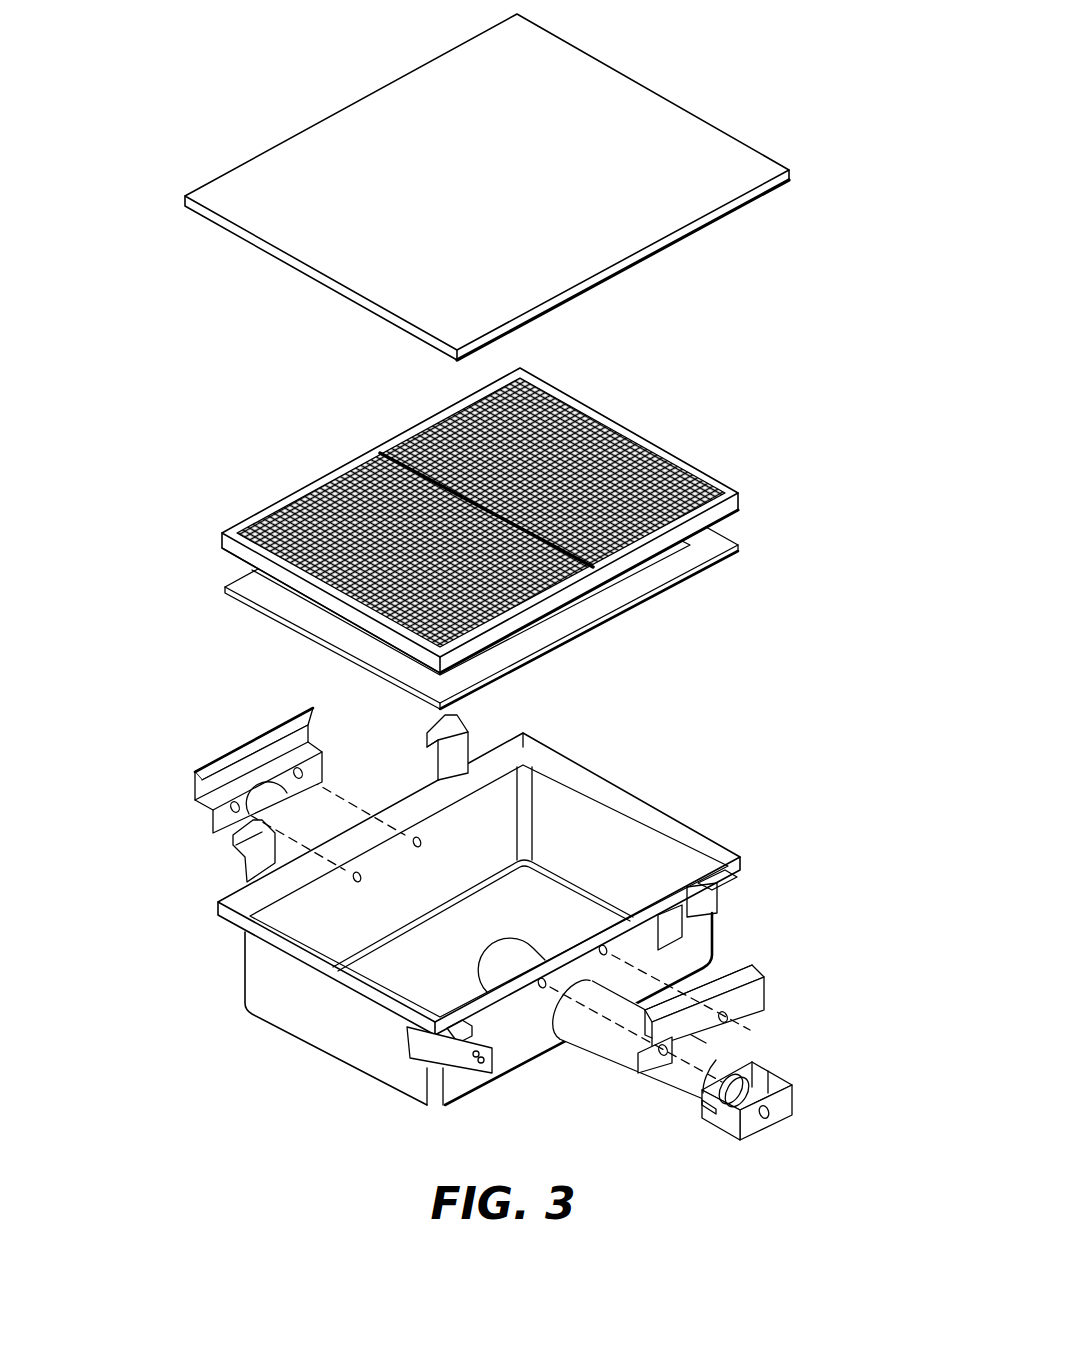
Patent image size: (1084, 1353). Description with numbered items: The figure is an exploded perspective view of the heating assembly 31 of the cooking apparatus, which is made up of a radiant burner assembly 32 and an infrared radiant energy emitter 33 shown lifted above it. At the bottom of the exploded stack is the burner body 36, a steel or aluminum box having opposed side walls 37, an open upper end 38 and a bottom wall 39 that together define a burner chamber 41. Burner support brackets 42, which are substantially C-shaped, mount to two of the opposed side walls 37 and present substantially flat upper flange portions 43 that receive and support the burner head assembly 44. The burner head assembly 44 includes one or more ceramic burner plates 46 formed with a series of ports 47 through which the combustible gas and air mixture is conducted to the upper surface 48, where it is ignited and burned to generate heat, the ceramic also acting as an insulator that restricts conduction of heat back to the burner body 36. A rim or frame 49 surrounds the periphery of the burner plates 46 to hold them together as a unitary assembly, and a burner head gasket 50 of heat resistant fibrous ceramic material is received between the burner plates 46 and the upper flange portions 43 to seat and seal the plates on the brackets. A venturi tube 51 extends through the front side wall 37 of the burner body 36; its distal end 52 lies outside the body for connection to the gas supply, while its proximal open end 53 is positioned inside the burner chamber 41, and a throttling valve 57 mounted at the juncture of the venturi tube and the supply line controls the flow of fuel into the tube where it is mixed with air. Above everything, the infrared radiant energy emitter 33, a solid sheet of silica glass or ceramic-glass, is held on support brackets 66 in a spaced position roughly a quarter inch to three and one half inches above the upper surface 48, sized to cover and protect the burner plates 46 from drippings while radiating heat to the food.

The heating assembly 31 is at (872, 495).
The radiant burner assembly 32 is at (715, 800).
The infrared radiant energy emitter 33 is at (772, 207).
The burner body 36 is at (716, 950).
The side walls 37 is at (617, 838).
The open upper end 38 is at (550, 748).
The bottom wall 39 is at (425, 973).
The burner chamber 41 is at (402, 982).
The burner support brackets 42 is at (479, 941).
The upper flange portions 43 is at (192, 770).
The burner head assembly 44 is at (738, 464).
The burner plates 46 is at (606, 430).
The ports 47 is at (650, 447).
The upper surface 48 is at (360, 462).
The rim or frame 49 is at (233, 548).
The burner head gasket 50 is at (245, 605).
The venturi tube 51 is at (607, 1045).
The distal end 52 is at (692, 1100).
The proximal open end 53 is at (500, 958).
The throttling valve 57 is at (760, 1060).
The support brackets 66 is at (457, 740).